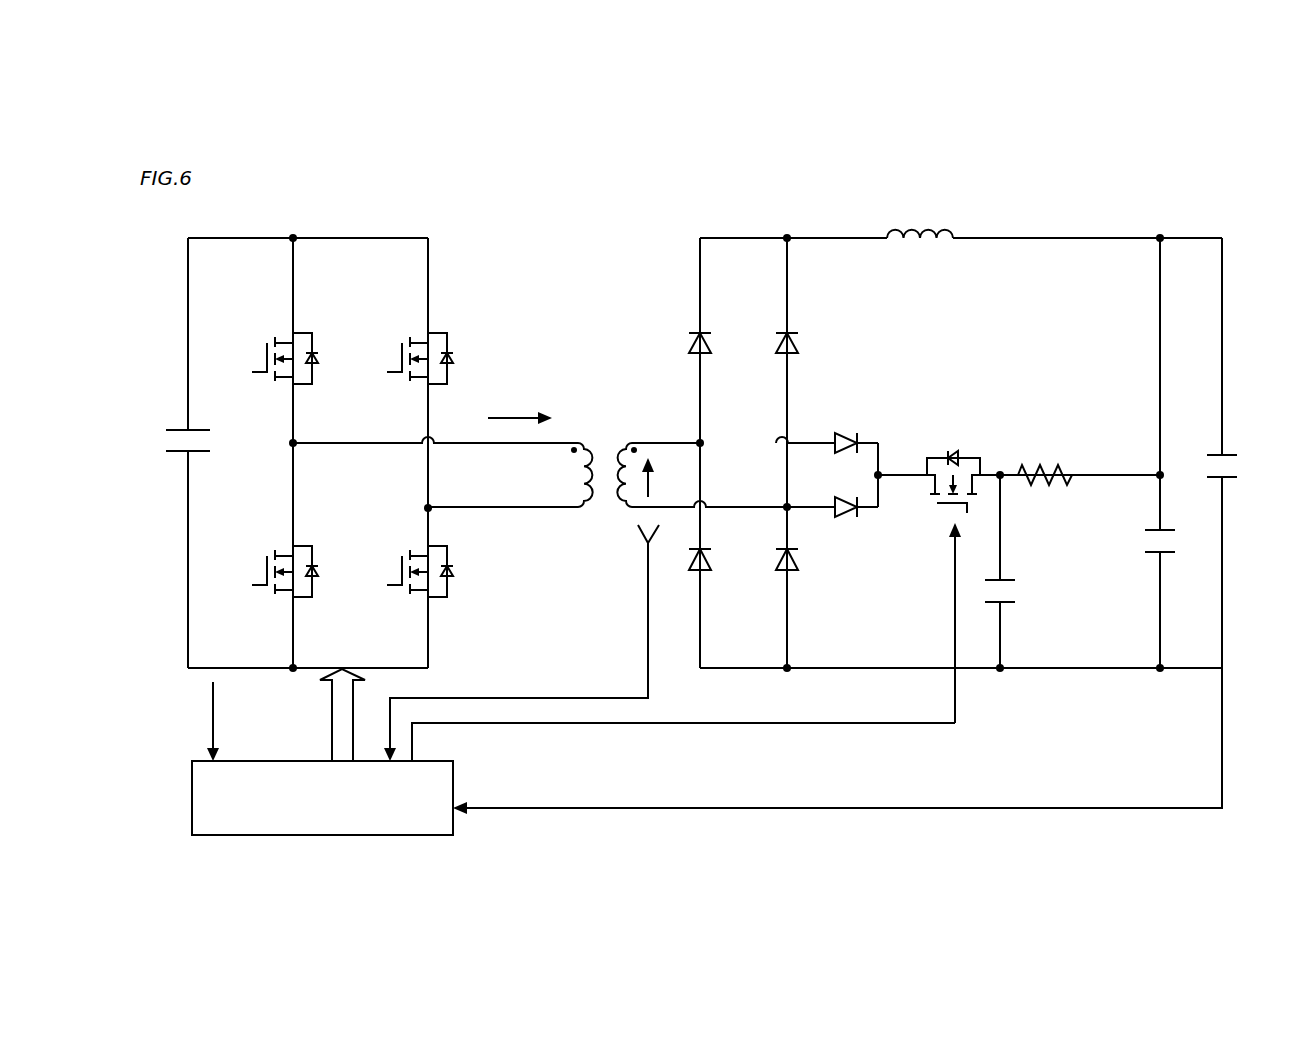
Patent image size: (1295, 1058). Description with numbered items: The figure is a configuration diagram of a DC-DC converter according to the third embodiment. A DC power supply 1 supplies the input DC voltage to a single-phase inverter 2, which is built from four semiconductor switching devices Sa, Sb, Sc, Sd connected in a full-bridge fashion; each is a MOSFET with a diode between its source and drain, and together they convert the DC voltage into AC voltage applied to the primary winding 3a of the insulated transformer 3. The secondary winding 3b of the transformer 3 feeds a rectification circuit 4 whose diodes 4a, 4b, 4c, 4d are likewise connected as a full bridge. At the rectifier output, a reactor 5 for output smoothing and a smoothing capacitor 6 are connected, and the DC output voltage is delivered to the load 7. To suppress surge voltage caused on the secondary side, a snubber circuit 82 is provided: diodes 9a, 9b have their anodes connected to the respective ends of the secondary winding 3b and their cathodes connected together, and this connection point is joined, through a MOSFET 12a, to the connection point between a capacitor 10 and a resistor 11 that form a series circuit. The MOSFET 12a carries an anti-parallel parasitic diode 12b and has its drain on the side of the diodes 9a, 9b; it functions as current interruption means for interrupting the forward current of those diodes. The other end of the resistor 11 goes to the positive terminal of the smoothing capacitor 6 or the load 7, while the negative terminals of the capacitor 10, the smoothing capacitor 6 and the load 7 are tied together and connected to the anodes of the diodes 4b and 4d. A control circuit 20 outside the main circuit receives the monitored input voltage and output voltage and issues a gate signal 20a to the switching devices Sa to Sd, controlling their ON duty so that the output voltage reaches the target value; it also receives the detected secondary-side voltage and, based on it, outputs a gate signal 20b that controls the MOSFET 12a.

The DC power supply 1 is at (168, 462).
The single-phase inverter 2 is at (355, 411).
The semiconductor switching device Sa is at (275, 328).
The semiconductor switching device Sb is at (275, 540).
The semiconductor switching device Sc is at (442, 328).
The semiconductor switching device Sd is at (458, 550).
The insulated transformer 3 is at (540, 478).
The primary winding 3a is at (587, 523).
The secondary winding 3b is at (628, 523).
The rectification circuit 4 is at (943, 411).
The diode 4a is at (688, 320).
The diode 4b is at (693, 580).
The diode 4c is at (800, 325).
The diode 4d is at (778, 580).
The reactor 5 is at (920, 212).
The smoothing capacitor 6 is at (1168, 517).
The load 7 is at (1235, 485).
The snubber circuit 82 is at (968, 485).
The diode 9a is at (852, 432).
The diode 9b is at (847, 520).
The capacitor 10 is at (1013, 573).
The resistor 11 is at (1063, 462).
The MOSFET 12a is at (977, 507).
The diode 12b is at (952, 443).
The control circuit 20 is at (699, 679).
The gate signal 20a is at (325, 705).
The gate signal 20b is at (958, 697).